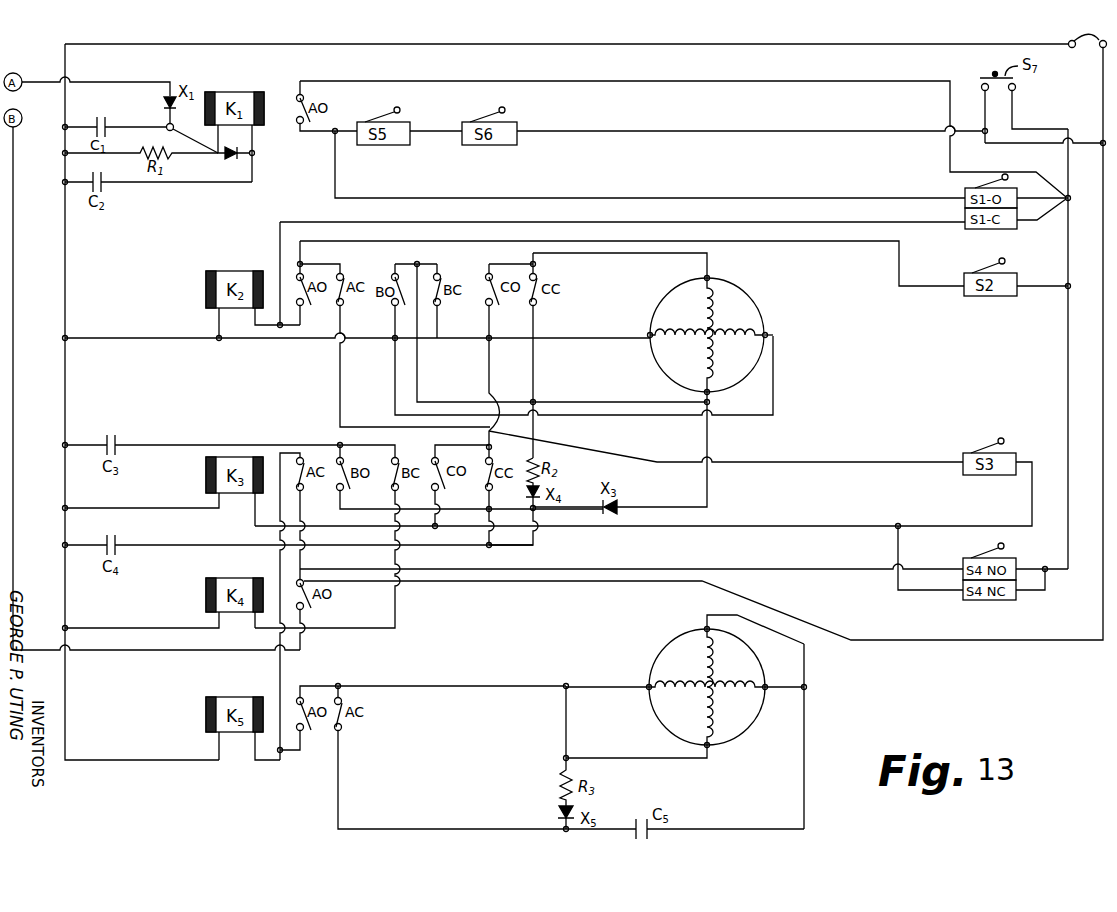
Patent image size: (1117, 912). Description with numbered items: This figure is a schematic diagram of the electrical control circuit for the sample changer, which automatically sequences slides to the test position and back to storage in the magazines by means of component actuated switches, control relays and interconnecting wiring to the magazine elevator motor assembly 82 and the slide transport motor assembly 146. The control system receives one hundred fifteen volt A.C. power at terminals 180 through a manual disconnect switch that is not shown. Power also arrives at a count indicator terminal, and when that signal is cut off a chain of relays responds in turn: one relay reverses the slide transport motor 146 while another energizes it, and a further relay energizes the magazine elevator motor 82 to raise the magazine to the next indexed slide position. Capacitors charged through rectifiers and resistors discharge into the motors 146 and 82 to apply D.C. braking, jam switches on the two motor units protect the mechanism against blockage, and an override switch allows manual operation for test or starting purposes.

The terminals 180 is at (1076, 36).
The slide transport motor assembly 146 is at (754, 288).
The magazine elevator motor assembly 82 is at (660, 645).